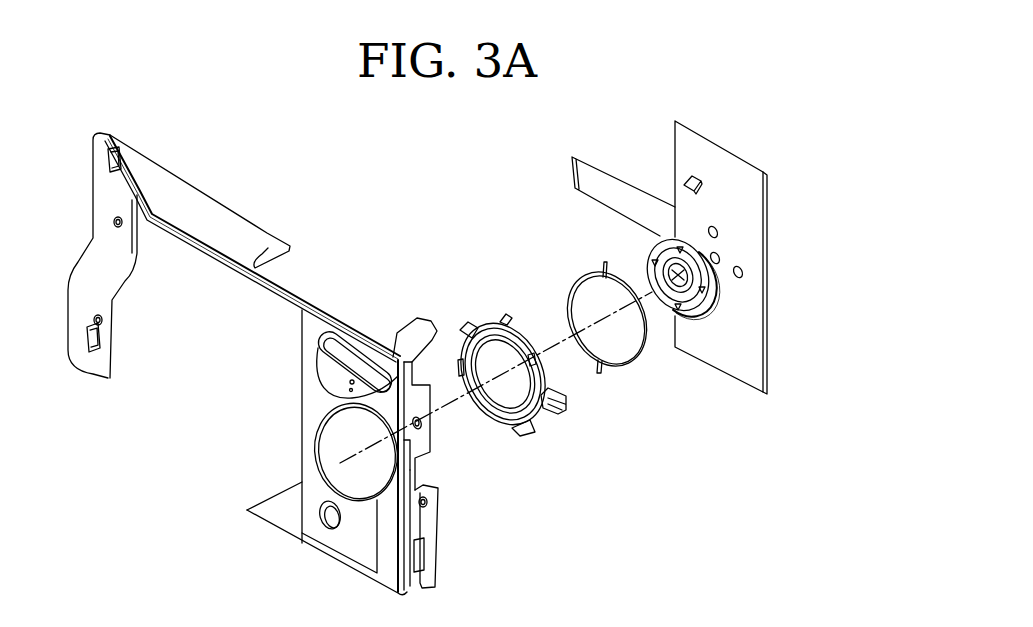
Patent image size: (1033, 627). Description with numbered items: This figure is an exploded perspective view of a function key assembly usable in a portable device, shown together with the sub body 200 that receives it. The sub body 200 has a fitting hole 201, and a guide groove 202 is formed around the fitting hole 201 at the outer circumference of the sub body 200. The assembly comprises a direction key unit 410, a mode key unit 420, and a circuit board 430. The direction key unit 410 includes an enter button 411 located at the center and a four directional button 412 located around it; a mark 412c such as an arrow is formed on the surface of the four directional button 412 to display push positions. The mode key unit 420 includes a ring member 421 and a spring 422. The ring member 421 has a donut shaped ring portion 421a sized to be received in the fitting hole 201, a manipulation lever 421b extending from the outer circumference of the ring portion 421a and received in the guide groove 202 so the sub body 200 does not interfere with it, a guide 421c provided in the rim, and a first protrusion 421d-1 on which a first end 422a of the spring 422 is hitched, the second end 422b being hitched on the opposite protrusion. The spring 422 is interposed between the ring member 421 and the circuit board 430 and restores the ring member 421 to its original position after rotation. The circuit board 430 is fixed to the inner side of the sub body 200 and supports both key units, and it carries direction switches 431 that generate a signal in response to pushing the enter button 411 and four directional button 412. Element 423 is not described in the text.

The sub body 200 is at (458, 505).
The fitting hole 201 is at (388, 505).
The guide groove 202 is at (403, 473).
The direction key unit 410 is at (648, 228).
The enter button 411 is at (678, 290).
The four directional button 412 is at (700, 308).
The mark 412c is at (684, 247).
The mode key unit 420 is at (468, 246).
The ring member 421 is at (475, 306).
The ring portion 421a is at (548, 413).
The manipulation lever 421b is at (567, 402).
The guide 421c is at (462, 325).
The first protrusion 421d-1 is at (528, 301).
The spring 422 is at (573, 279).
The first end 422a is at (605, 270).
The second end 422b is at (601, 372).
The connector block 423 is at (692, 177).
The circuit board 430 is at (740, 373).
The direction switches 431 is at (740, 271).